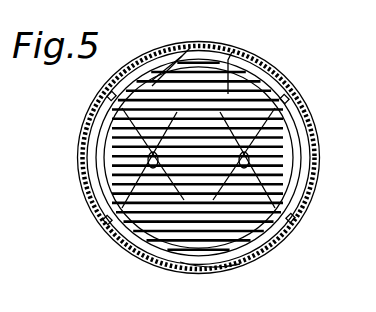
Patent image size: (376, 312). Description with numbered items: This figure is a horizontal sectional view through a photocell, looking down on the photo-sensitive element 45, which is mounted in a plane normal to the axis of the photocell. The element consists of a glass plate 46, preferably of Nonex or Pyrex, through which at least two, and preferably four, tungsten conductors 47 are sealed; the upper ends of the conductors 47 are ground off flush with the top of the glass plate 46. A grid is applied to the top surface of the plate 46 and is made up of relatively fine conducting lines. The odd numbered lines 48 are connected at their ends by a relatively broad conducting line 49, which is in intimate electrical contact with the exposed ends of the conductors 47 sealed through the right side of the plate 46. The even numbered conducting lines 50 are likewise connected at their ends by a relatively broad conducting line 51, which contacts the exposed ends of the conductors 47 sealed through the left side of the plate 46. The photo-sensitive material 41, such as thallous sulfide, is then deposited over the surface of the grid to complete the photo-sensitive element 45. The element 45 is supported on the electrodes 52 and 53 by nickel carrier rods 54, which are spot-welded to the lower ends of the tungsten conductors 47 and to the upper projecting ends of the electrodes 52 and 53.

The photo-sensitive material 41 is at (256, 262).
The photo-sensitive element 45 is at (270, 85).
The glass plate 46 is at (222, 268).
The tungsten conductors 47 is at (108, 96).
The odd numbered lines 48 is at (232, 52).
The broad conducting line 49 is at (306, 135).
The even numbered conducting lines 50 is at (188, 50).
The broad conducting line 51 is at (104, 180).
The electrode 52 is at (150, 159).
The electrode 53 is at (262, 164).
The nickel carrier rods 54 is at (118, 204).